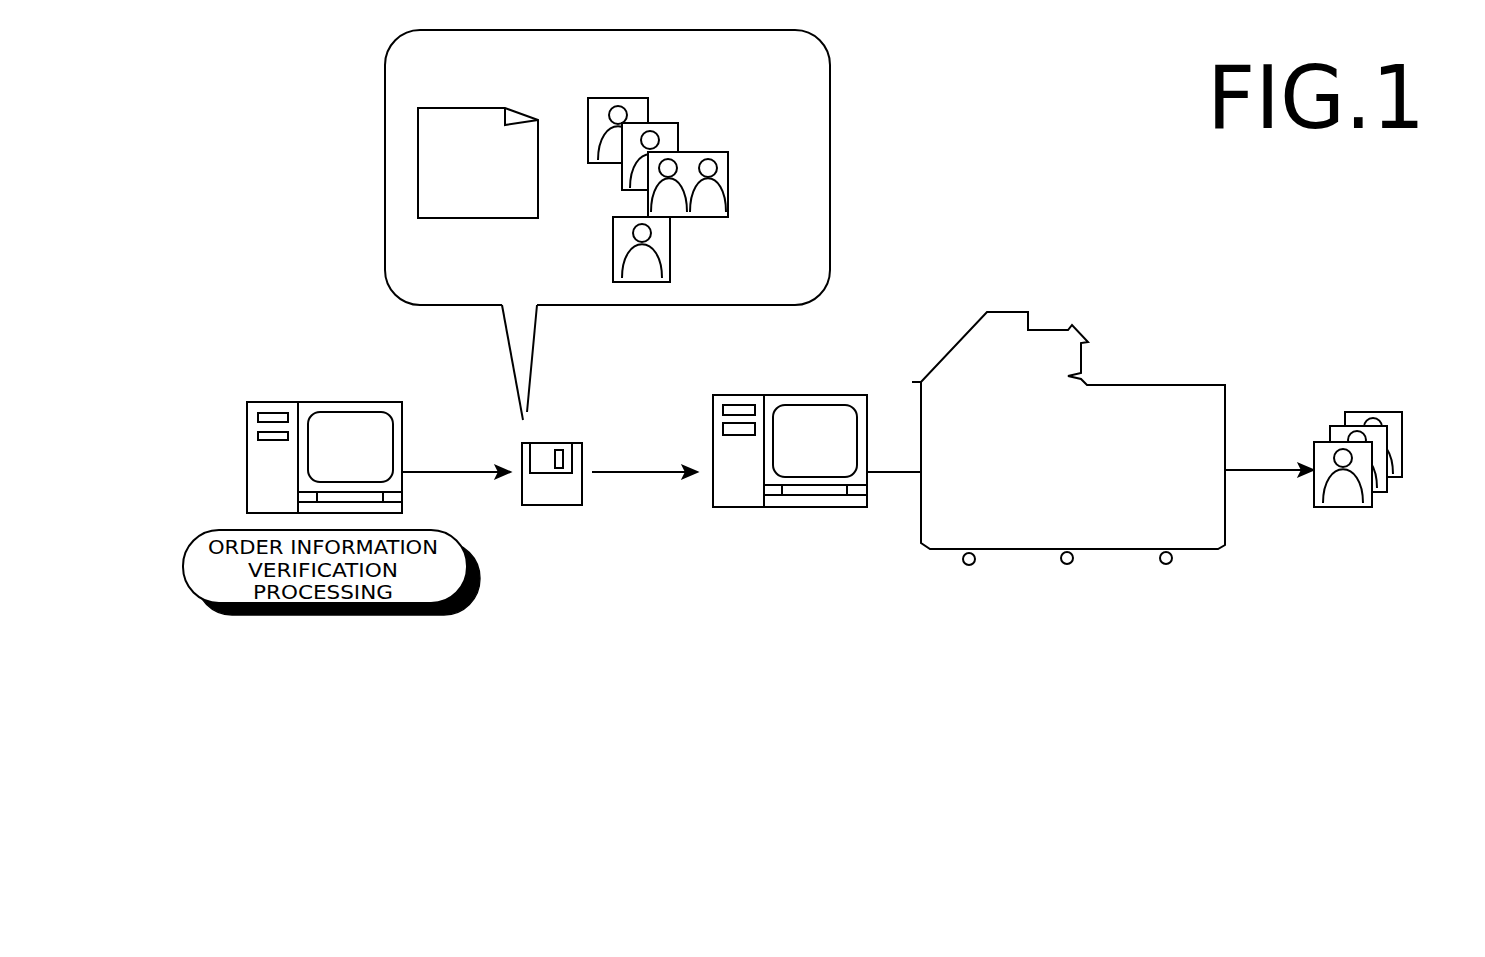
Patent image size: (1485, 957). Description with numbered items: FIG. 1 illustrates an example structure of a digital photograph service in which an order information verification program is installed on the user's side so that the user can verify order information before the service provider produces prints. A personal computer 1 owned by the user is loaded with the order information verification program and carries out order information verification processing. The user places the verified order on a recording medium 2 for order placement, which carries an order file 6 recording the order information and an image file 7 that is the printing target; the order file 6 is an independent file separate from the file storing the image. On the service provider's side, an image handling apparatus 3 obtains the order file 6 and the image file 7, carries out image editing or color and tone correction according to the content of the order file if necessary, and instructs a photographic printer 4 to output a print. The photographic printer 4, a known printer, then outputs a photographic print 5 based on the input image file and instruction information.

The personal computer 1 is at (372, 402).
The recording medium 2 is at (555, 443).
The image handling apparatus 3 is at (818, 395).
The photographic printer 4 is at (1177, 385).
The photographic print 5 is at (1402, 420).
The order file 6 is at (492, 219).
The image file 7 is at (730, 190).